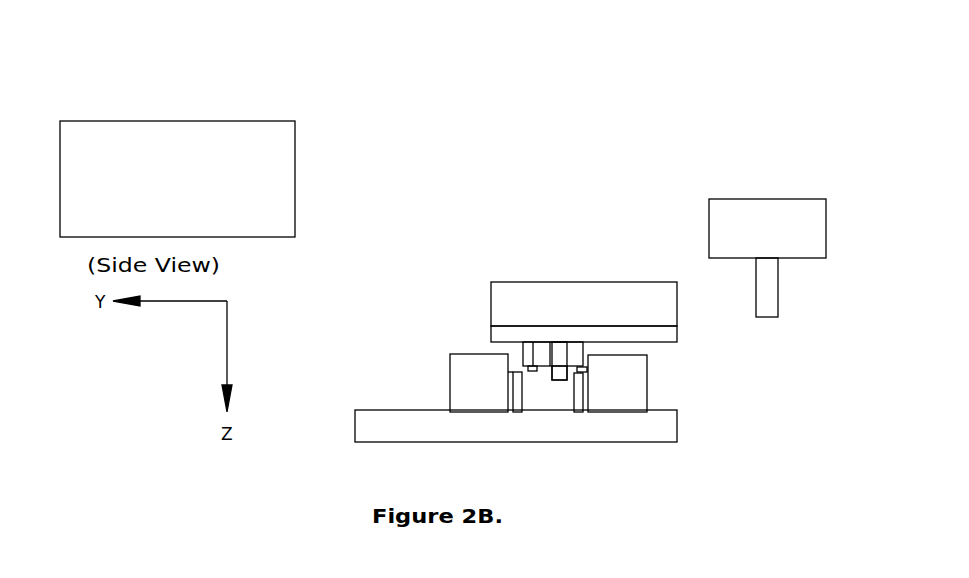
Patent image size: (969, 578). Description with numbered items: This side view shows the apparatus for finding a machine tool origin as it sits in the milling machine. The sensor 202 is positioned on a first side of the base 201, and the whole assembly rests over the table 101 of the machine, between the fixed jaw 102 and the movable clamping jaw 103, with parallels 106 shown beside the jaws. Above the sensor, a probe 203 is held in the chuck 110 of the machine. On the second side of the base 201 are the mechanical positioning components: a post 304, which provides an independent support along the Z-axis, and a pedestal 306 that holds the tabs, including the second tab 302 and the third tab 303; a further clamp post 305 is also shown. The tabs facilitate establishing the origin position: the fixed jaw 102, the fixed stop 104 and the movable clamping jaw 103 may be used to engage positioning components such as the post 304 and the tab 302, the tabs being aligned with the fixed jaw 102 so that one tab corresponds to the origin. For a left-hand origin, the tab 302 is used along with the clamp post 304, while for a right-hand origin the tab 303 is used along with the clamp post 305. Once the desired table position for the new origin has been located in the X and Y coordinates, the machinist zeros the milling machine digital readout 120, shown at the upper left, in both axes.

The milling machine digital readout 120 is at (155, 130).
The chuck 110 is at (737, 223).
The probe 203 is at (767, 298).
The sensor 202 is at (518, 293).
The base 201 is at (662, 335).
The post 304 is at (520, 348).
The pedestal 306 is at (540, 350).
The clamp post 305 is at (560, 355).
The fixed stop 104 is at (569, 378).
The third tab 303 is at (527, 368).
The second tab 302 is at (588, 372).
The movable clamping jaw 103 is at (462, 392).
The fixed jaw 102 is at (628, 388).
The table 101 is at (422, 423).
The parallels 106 is at (577, 396).